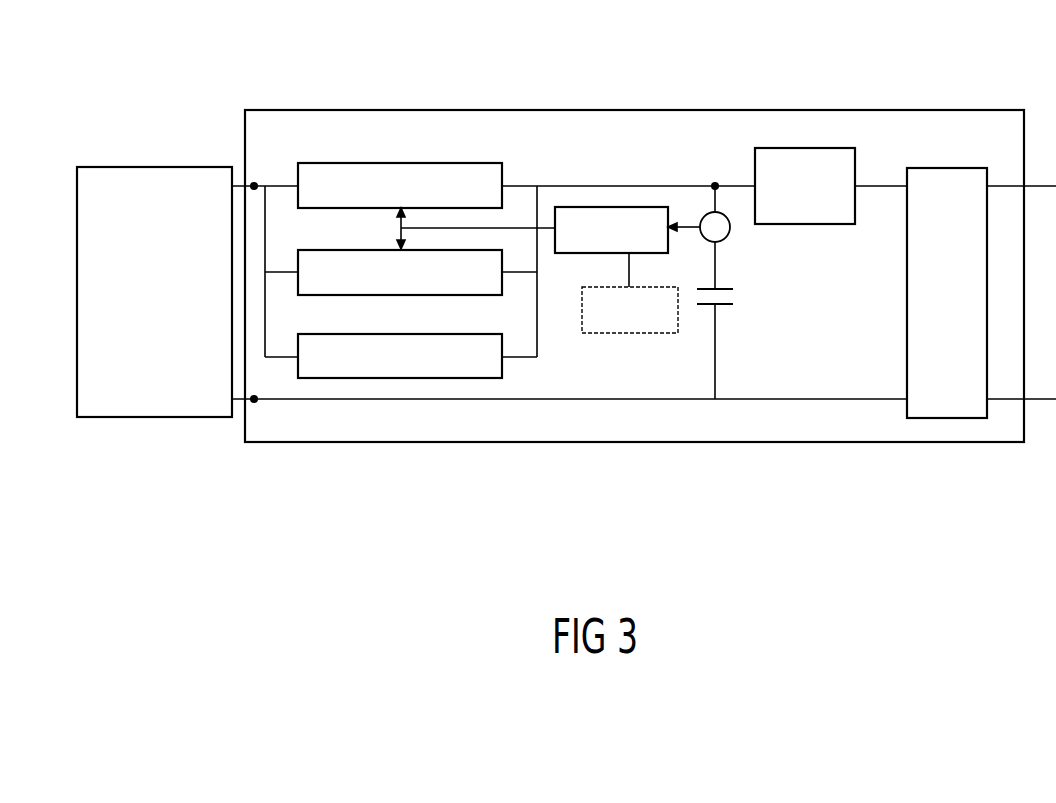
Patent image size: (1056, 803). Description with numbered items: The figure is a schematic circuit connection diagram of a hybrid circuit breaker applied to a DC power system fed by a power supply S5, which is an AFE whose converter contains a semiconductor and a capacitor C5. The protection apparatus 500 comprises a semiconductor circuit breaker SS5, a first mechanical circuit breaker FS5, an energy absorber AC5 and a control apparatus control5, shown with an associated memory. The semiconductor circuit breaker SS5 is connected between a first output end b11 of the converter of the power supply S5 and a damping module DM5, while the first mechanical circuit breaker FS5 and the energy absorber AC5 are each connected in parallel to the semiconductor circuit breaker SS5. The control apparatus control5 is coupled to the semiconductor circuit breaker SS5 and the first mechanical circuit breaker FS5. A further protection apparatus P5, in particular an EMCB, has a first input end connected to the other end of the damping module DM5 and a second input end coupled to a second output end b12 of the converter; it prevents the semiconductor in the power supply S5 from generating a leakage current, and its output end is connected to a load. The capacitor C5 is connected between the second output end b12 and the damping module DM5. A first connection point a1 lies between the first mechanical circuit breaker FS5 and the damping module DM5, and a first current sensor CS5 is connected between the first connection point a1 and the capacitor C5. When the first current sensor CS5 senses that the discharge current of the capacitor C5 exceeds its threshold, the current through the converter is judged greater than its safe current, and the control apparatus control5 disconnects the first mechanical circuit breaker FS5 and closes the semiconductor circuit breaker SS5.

The protection apparatus 500 is at (595, 110).
The power supply S5 is at (170, 304).
The protection apparatus P5 is at (964, 303).
The first mechanical circuit breaker FS5 is at (370, 202).
The semiconductor circuit breaker SS5 is at (370, 289).
The energy absorber AC5 is at (370, 373).
The control apparatus control5 is at (660, 247).
The element memory is at (630, 310).
The damping module DM5 is at (832, 206).
The first current sensor CS5 is at (728, 236).
The capacitor C5 is at (733, 303).
The first connection point a1 is at (715, 185).
The first output end b11 is at (256, 183).
The second output end b12 is at (255, 402).